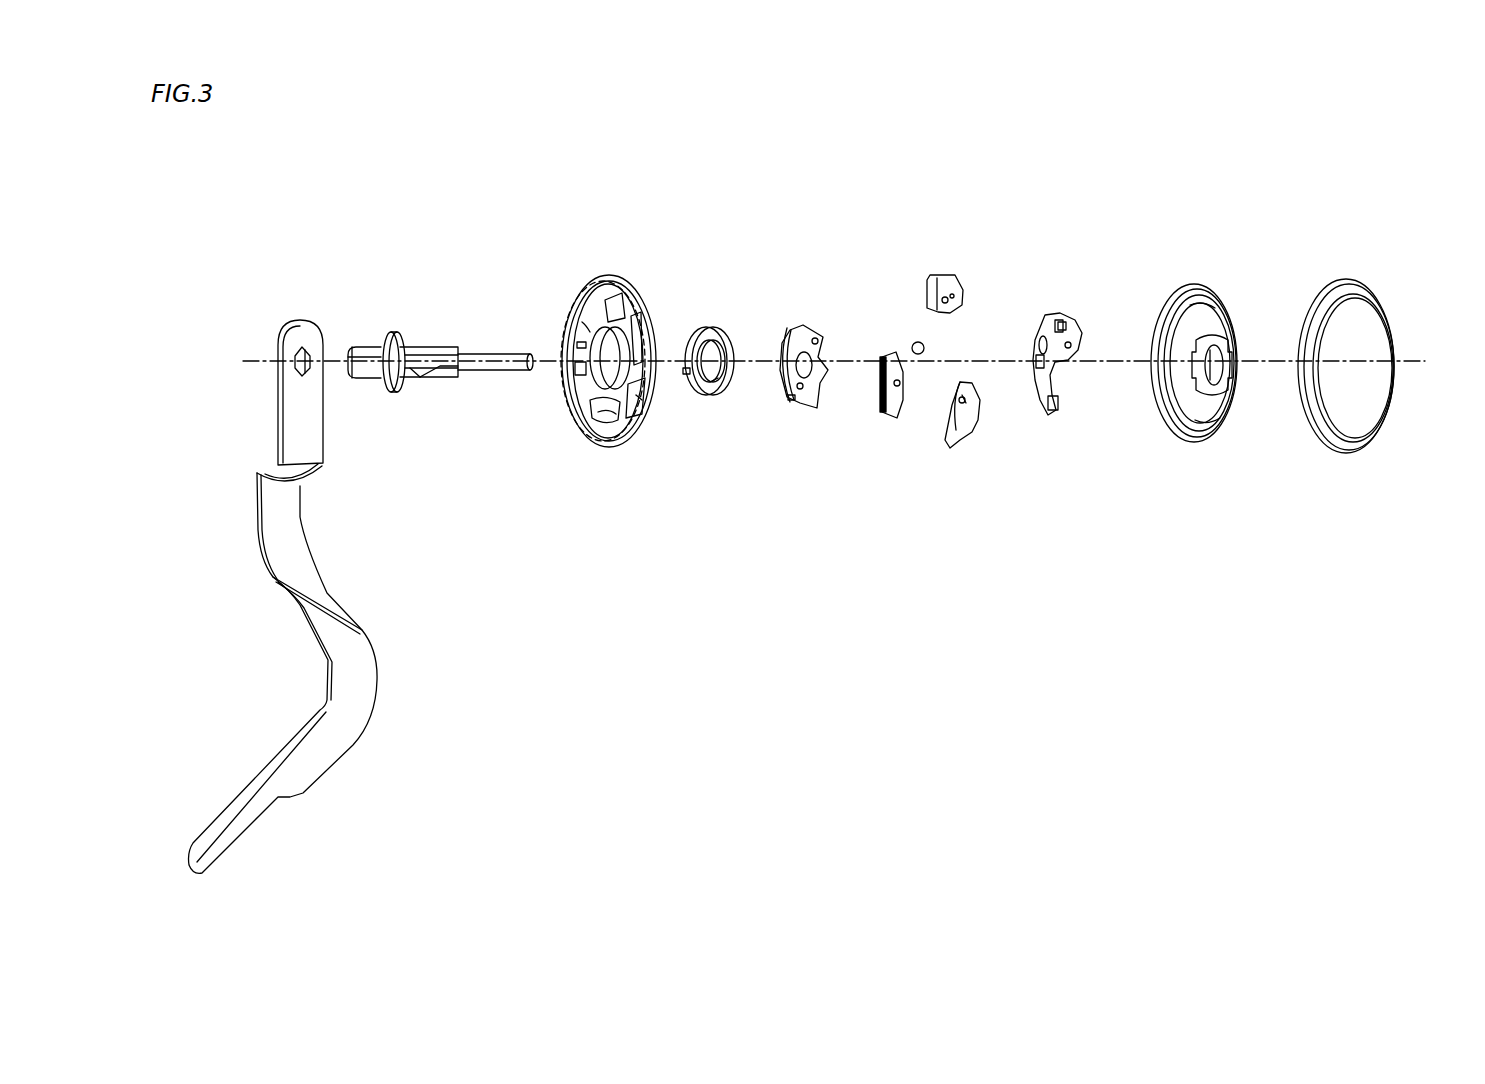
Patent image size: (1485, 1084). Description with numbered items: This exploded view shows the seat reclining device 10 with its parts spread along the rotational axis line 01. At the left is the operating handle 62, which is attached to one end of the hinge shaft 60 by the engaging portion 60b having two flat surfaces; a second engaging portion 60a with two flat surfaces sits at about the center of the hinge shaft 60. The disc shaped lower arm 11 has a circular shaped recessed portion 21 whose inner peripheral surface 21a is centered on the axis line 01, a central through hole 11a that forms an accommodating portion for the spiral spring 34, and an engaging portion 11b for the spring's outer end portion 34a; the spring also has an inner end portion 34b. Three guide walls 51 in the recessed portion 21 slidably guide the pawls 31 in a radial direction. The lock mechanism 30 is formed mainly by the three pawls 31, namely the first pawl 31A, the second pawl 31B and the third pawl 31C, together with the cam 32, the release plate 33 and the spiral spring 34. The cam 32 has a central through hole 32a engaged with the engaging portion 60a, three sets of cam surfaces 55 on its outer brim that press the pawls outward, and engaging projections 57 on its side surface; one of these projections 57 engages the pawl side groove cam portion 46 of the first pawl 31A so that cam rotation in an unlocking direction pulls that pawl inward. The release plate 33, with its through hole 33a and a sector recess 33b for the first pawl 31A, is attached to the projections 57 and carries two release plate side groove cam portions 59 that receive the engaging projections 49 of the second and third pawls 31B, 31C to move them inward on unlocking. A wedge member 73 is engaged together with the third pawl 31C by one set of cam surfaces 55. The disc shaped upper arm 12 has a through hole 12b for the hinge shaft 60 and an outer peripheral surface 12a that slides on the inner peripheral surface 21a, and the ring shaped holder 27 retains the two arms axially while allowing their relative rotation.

The rotational axis line 01 is at (853, 368).
The seat reclining device 10 is at (708, 210).
The lower arm 11 is at (592, 282).
The through hole 11a is at (596, 358).
The engaging portion 11b is at (575, 383).
The upper arm 12 is at (1177, 285).
The outer peripheral surface 12a is at (1170, 430).
The through hole 12b is at (1215, 372).
The circular shaped recessed portion 21 is at (620, 292).
The inner peripheral surface 21a is at (638, 422).
The holder 27 is at (1320, 283).
The lock mechanism 30 is at (888, 275).
The pawls 31 is at (912, 444).
The first pawl 31A is at (966, 432).
The second pawl 31B is at (880, 400).
The third pawl 31C is at (946, 280).
The cam 32 is at (812, 322).
The through hole 32a is at (812, 365).
The release plate 33 is at (1050, 311).
The through hole 33a is at (1036, 360).
The sector recess 33b is at (1056, 398).
The spiral spring 34 is at (715, 322).
The outer end portion 34a is at (687, 378).
The inner end portion 34b is at (725, 390).
The pawl side groove cam portion 46 is at (966, 405).
The engaging projection 49 is at (900, 383).
The guide walls 51 is at (606, 420).
The cam surfaces 55 is at (787, 350).
The engaging projections 57 is at (792, 405).
The release plate side groove cam portions 59 is at (1062, 320).
The hinge shaft 60 is at (447, 340).
The engaging portion 60a is at (409, 378).
The engaging portion 60b is at (358, 347).
The operating handle 62 is at (312, 568).
The wedge member 73 is at (917, 342).